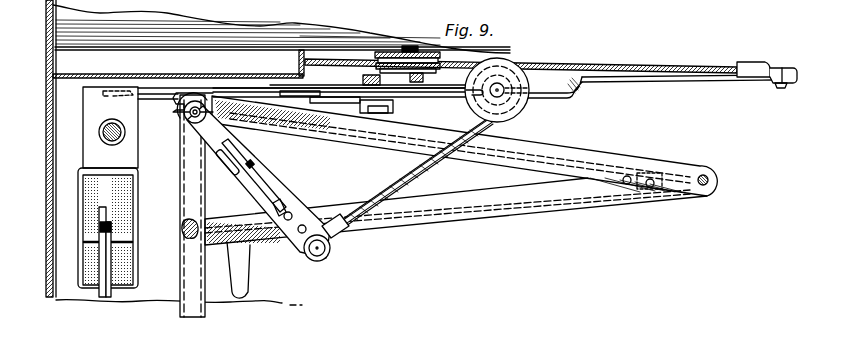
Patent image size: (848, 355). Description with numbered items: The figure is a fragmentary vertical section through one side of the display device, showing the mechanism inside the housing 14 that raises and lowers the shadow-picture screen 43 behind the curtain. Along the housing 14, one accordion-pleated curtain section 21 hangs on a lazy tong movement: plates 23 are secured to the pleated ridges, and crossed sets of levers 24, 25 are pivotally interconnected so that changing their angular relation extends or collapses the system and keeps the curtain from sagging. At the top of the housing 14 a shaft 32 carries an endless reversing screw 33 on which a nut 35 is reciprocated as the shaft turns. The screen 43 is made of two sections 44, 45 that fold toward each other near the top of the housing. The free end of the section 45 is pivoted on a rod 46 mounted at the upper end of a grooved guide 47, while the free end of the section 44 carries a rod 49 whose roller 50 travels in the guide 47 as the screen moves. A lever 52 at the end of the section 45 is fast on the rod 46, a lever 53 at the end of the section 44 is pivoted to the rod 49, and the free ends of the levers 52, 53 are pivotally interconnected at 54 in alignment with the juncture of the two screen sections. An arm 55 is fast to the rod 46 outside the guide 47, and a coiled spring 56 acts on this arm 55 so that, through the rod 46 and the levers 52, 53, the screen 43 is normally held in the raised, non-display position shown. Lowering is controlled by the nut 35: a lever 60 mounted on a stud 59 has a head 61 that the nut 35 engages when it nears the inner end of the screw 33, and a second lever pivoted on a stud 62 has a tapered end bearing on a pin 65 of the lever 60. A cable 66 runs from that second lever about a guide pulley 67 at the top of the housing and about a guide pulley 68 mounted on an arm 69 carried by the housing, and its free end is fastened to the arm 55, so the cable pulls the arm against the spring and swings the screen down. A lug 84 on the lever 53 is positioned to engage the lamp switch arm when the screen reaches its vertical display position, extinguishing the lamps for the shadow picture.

The housing 14 is at (112, 13).
The curtain section 21 is at (78, 275).
The plate 23 is at (97, 223).
The lever 24 is at (110, 296).
The lever 25 is at (103, 298).
The shaft 32 is at (100, 128).
The endless reversing screw 33 is at (100, 140).
The nut 35 is at (92, 107).
The screen 43 is at (590, 161).
The screen section 44 is at (522, 207).
The screen section 45 is at (557, 152).
The rod 46 is at (190, 117).
The grooved guide 47 is at (195, 314).
The rod 49 is at (185, 227).
The roller 50 is at (187, 245).
The lever 52 is at (640, 158).
The lever 53 is at (456, 222).
The pivotal interconnection 54 is at (708, 176).
The arm 55 is at (287, 188).
The coiled spring 56 is at (255, 171).
The stud 59 is at (296, 115).
The lever 60 is at (241, 96).
The head 61 is at (128, 76).
The stud 62 is at (372, 114).
The pin 65 is at (332, 85).
The cable 66 is at (587, 63).
The guide pulley 67 is at (437, 52).
The guide pulley 68 is at (528, 117).
The arm 69 is at (433, 98).
The lug 84 is at (252, 285).